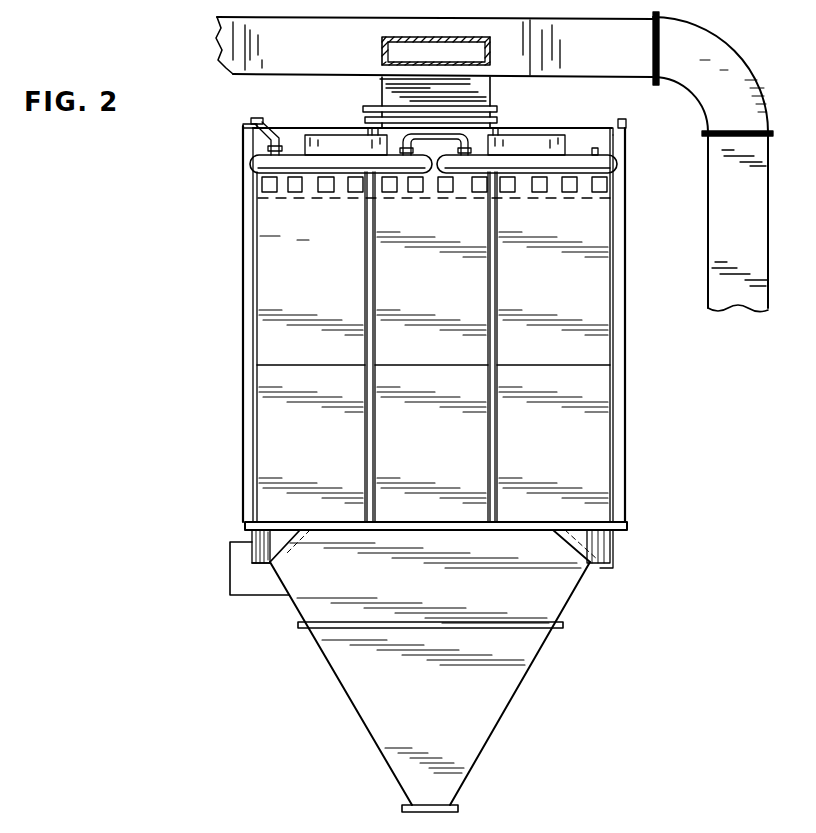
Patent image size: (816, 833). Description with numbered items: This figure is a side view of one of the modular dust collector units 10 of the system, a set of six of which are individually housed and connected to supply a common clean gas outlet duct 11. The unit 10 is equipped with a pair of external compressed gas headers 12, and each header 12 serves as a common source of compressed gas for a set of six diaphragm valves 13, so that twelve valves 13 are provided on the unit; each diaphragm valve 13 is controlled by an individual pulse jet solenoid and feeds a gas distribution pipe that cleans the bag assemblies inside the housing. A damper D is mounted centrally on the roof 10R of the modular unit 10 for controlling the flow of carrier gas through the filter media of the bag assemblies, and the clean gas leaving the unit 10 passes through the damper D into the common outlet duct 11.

The dust collector unit 10 is at (241, 192).
The roof 10R is at (516, 130).
The clean gas outlet duct 11 is at (603, 60).
The external compressed gas header 12 is at (315, 160).
The diaphragm valve 13 is at (358, 192).
The damper D is at (528, 92).